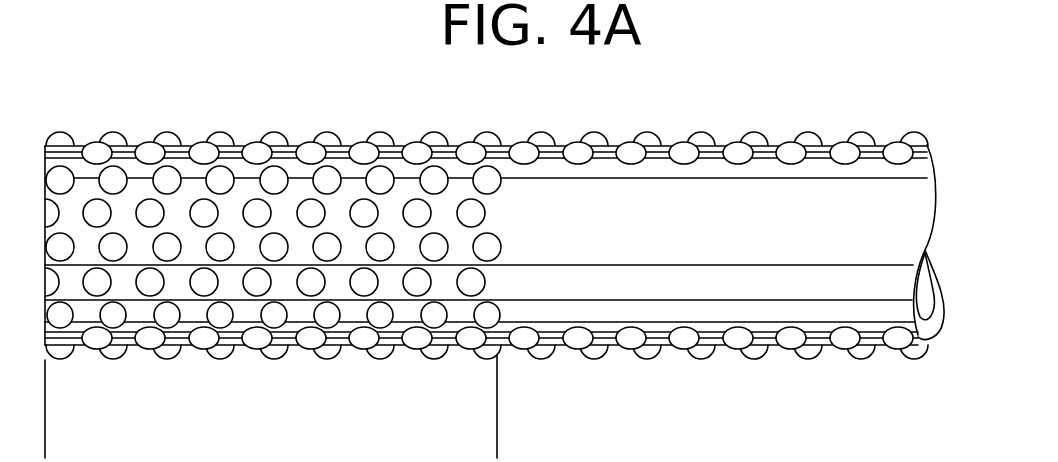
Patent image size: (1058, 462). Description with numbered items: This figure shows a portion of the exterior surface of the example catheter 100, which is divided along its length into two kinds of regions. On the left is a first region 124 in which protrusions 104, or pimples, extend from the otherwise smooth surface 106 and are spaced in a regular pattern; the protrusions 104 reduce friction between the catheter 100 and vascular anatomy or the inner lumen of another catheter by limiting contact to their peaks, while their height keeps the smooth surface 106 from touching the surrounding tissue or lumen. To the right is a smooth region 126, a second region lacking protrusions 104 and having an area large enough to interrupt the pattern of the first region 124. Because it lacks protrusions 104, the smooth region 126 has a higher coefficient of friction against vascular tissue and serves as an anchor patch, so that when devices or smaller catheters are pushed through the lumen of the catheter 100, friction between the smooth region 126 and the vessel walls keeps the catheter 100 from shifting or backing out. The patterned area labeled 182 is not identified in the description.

The catheter 100 is at (718, 137).
The protrusions 104 is at (147, 151).
The smooth surface 106 is at (133, 308).
The first region 124 is at (497, 423).
The smooth region 126 is at (660, 313).
The braid pattern region 182 is at (348, 182).